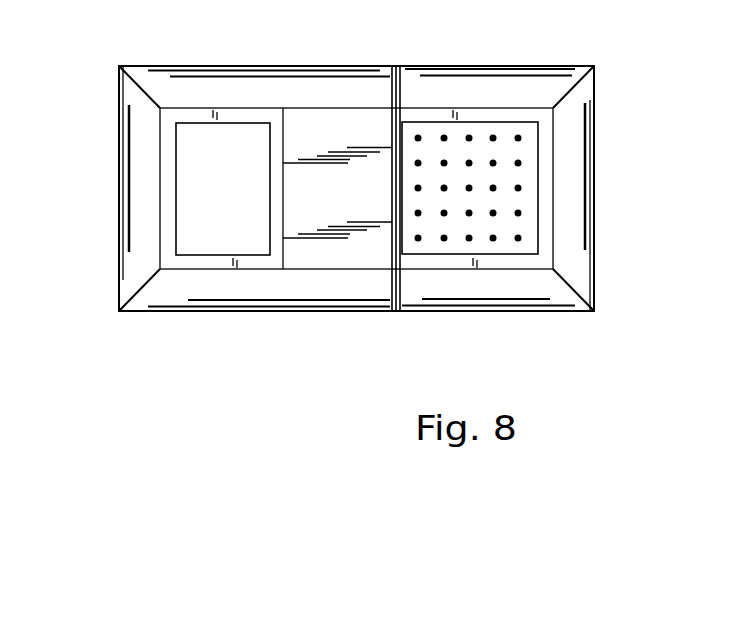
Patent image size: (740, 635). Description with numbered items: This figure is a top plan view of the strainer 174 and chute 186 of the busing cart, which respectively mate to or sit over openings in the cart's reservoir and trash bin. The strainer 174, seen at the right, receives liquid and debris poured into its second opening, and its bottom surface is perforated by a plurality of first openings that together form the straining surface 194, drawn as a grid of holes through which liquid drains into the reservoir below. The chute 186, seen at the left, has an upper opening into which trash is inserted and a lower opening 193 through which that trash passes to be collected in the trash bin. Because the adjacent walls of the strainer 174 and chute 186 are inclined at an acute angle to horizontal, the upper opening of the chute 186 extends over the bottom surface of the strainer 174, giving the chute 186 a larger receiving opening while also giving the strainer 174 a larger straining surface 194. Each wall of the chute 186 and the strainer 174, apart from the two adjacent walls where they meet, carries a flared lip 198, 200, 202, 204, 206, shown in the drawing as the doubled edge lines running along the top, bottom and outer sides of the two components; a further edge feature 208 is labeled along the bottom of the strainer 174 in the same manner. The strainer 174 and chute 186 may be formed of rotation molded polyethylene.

The strainer 174 is at (429, 66).
The chute 186 is at (225, 68).
The lower opening 193 is at (247, 198).
The straining surface 194 is at (520, 172).
The flared lip 198 is at (333, 76).
The flared lip 200 is at (133, 140).
The flared lip 202 is at (227, 298).
The flared lip 204 is at (538, 70).
The flared lip 206 is at (583, 234).
The bottom right edge 208 is at (498, 297).